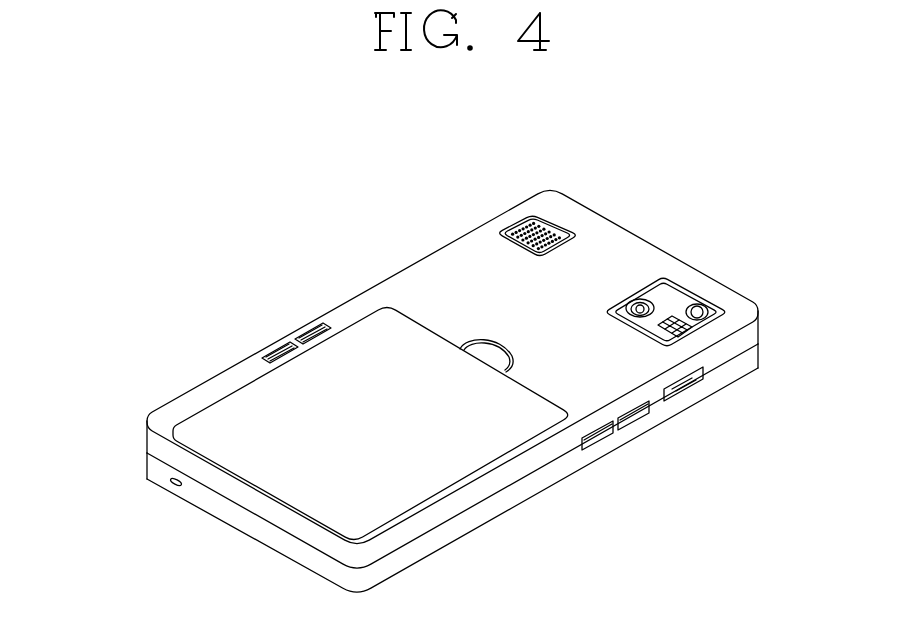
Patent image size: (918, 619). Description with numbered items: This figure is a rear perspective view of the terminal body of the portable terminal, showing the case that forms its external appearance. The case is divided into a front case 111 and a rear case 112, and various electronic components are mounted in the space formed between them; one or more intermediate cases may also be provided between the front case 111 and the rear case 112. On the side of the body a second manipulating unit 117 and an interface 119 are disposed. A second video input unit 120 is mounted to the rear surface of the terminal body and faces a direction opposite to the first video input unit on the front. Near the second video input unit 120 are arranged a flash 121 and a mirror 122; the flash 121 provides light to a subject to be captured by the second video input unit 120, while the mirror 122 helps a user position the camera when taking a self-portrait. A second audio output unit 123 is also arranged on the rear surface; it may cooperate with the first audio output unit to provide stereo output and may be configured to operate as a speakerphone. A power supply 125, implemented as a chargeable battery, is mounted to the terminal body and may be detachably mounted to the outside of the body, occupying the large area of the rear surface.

The front case 111 is at (153, 473).
The rear case 112 is at (152, 443).
The second manipulating unit 117 is at (602, 437).
The interface 119 is at (693, 383).
The second video input unit 120 is at (643, 300).
The flash 121 is at (670, 320).
The mirror 122 is at (700, 306).
The second audio output unit 123 is at (548, 216).
The power supply 125 is at (263, 410).